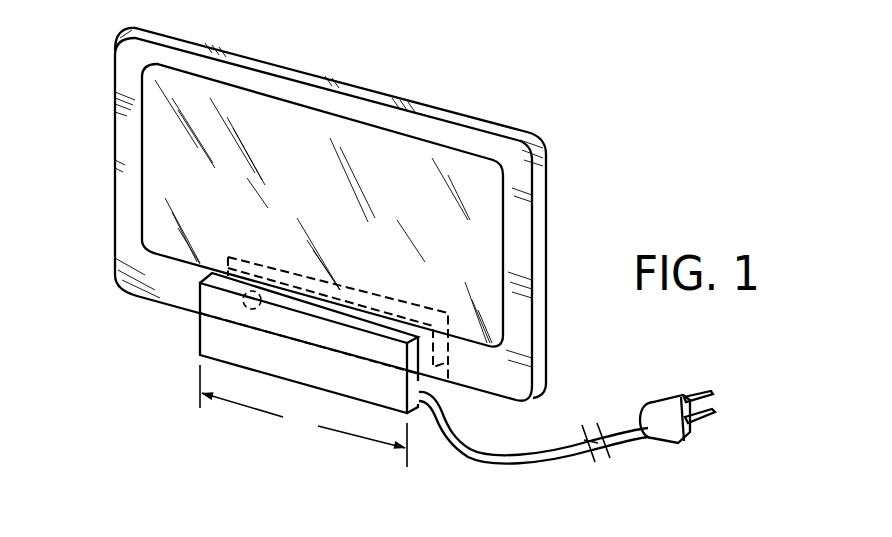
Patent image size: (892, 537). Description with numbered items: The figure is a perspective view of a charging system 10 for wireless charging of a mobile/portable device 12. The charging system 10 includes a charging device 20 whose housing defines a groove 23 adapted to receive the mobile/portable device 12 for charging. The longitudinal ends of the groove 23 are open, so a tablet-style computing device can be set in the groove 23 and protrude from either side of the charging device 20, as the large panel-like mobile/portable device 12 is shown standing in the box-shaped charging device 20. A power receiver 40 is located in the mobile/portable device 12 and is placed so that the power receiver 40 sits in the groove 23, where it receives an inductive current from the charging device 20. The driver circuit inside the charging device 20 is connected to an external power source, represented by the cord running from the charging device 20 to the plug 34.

The charging system 10 is at (106, 340).
The mobile/portable device 12 is at (547, 186).
The charging device 20 is at (200, 338).
The groove 23 is at (436, 389).
The plug 34 is at (667, 427).
The power receiver 40 is at (243, 300).